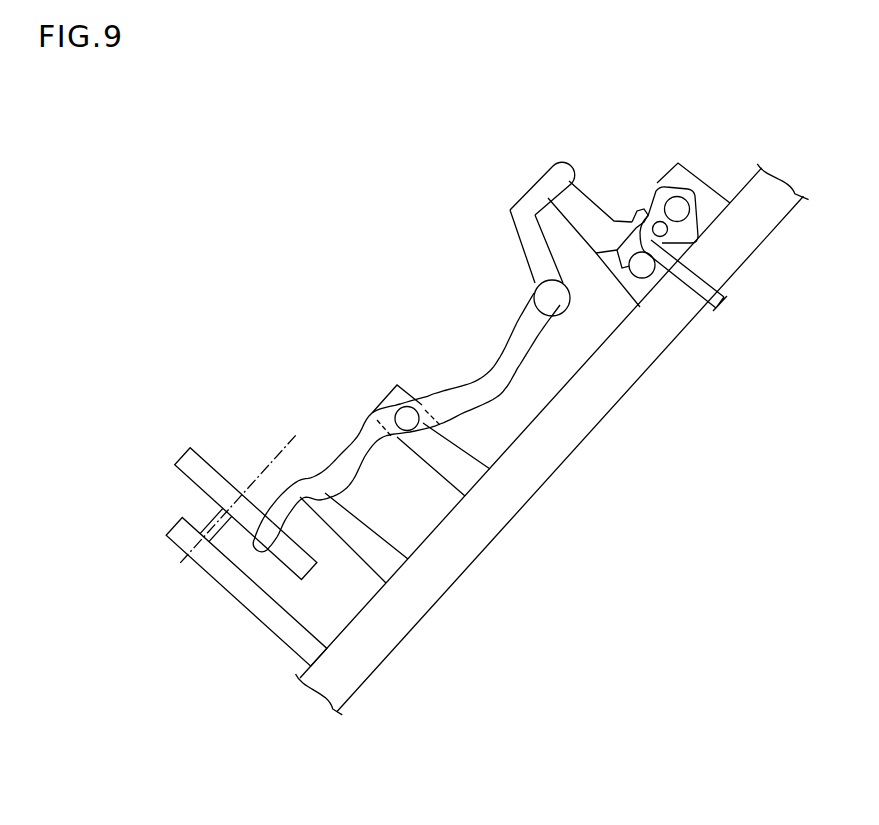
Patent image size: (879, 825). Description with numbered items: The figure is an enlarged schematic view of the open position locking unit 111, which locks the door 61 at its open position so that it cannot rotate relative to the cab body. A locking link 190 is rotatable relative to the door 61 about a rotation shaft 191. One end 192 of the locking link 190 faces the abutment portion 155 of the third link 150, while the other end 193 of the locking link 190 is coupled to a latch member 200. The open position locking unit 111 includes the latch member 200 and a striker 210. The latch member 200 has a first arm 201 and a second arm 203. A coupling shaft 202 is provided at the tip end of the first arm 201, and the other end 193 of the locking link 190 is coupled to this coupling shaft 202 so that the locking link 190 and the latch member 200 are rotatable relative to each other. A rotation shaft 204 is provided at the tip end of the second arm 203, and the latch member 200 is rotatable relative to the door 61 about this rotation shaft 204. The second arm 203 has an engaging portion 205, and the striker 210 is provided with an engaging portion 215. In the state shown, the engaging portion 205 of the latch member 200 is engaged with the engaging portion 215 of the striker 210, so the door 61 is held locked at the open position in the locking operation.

The door 61 is at (498, 497).
The open position locking unit 111 is at (482, 165).
The third link 150 is at (203, 481).
The abutment portion 155 is at (295, 562).
The locking link 190 is at (352, 444).
The rotation shaft 191 is at (404, 410).
The one end of the locking link 192 is at (257, 547).
The other end of the locking link 193 is at (552, 298).
The latch member 200 is at (550, 201).
The first arm 201 is at (527, 221).
The coupling shaft 202 is at (546, 290).
The second arm 203 is at (592, 202).
The rotation shaft 204 is at (647, 272).
The engaging portion 205 is at (625, 216).
The striker 210 is at (652, 198).
The engaging portion 215 is at (648, 212).